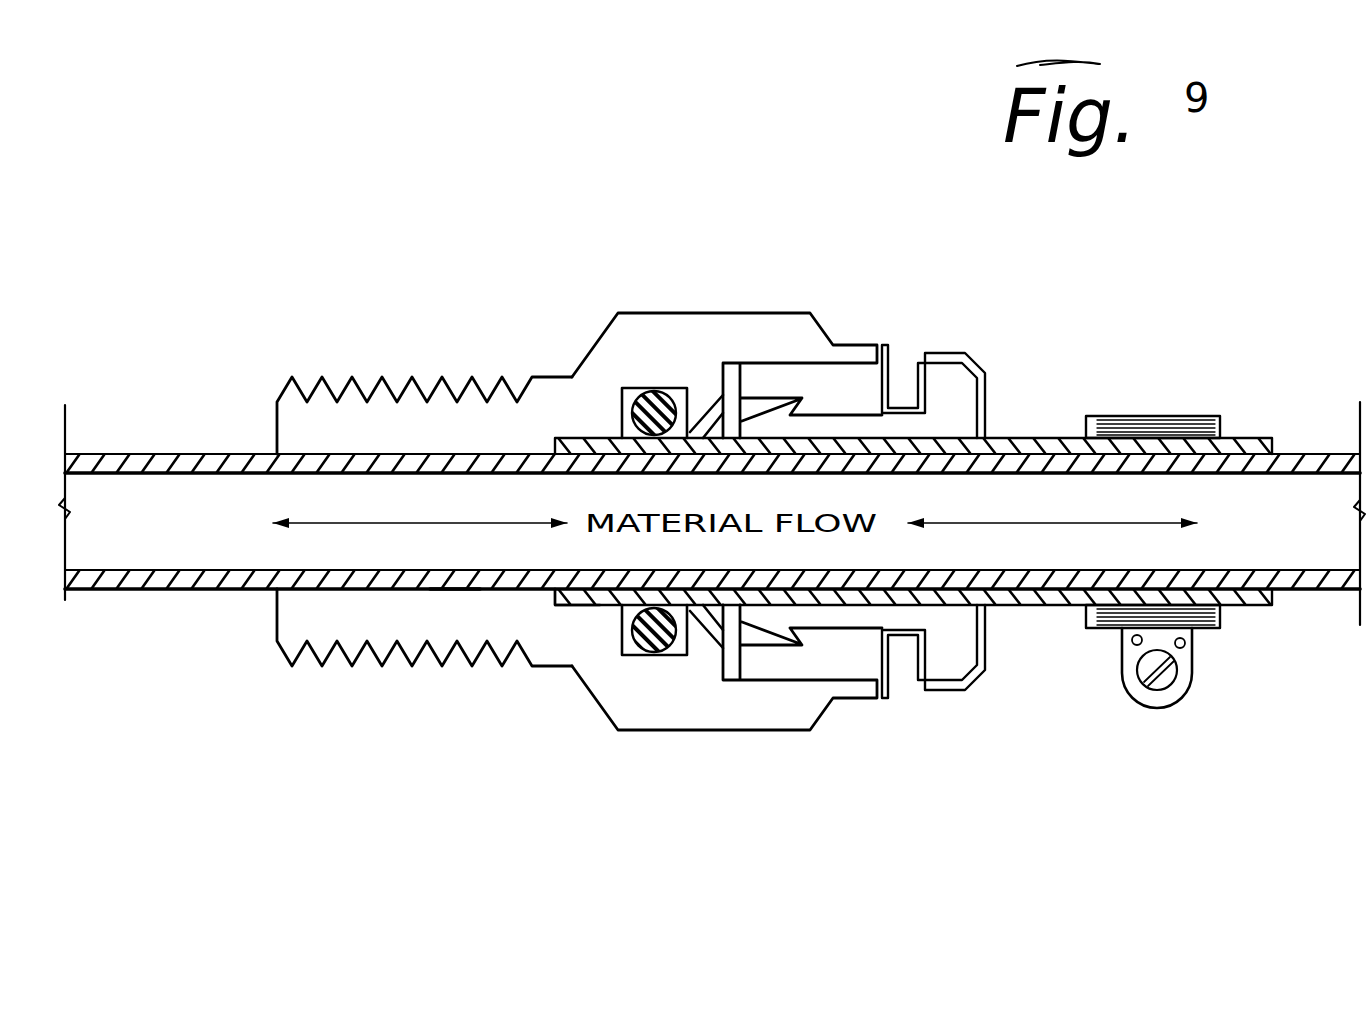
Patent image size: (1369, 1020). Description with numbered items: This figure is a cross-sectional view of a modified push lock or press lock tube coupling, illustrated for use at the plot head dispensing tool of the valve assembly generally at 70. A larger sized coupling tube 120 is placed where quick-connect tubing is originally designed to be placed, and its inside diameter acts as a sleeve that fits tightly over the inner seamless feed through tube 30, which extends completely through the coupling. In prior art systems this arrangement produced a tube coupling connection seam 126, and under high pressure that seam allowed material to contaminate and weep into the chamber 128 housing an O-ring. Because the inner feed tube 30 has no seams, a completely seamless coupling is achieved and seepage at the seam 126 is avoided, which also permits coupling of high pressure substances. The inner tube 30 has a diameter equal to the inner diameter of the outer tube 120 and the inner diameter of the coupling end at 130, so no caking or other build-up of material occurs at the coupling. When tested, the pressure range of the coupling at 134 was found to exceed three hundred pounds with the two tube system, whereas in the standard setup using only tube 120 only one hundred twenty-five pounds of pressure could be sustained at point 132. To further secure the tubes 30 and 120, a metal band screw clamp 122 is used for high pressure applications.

The seamless feed through tube 30 is at (175, 450).
The plot head dispensing tool location 70 is at (680, 186).
The coupling tube 120 is at (1234, 437).
The metal band screw clamp 122 is at (1140, 709).
The tube coupling connection seam 126 is at (540, 433).
The chamber housing an O-ring 128 is at (617, 407).
The coupling end 130 is at (387, 448).
The point of pressure limitation 132 is at (580, 592).
The coupling pressure test point 134 is at (455, 590).